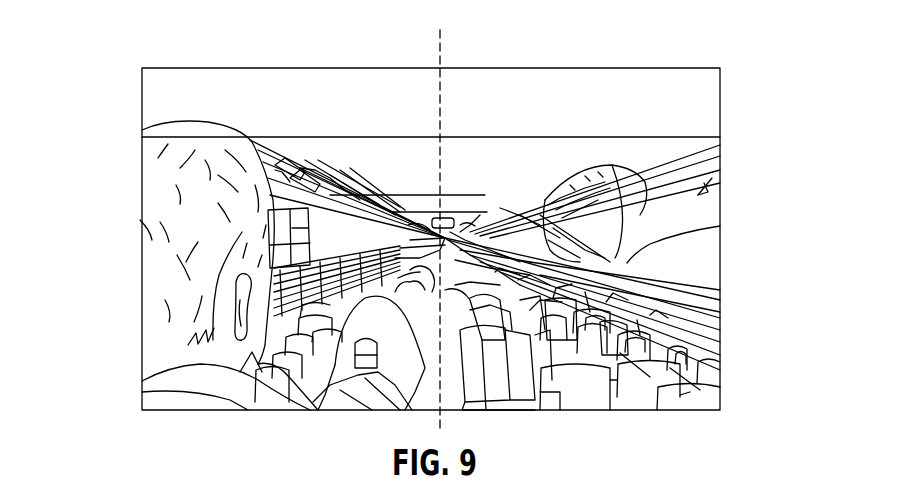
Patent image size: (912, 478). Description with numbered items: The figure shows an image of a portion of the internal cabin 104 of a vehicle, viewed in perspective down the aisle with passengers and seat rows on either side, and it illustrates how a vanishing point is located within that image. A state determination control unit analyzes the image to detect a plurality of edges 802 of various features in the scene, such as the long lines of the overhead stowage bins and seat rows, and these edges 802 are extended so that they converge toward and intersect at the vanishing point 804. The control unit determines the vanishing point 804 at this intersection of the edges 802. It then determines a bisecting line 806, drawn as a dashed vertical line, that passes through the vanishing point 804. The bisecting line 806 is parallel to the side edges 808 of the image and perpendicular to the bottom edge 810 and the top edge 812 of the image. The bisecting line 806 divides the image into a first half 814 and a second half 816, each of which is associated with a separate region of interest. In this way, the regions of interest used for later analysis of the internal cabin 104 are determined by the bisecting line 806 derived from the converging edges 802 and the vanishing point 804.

The internal cabin 104 is at (712, 178).
The edges 802 is at (293, 158).
The vanishing point 804 is at (490, 213).
The bisecting line 806 is at (441, 63).
The side edges 808 is at (140, 290).
The bottom edge 810 is at (575, 412).
The top edge 812 is at (378, 66).
The first half 814 is at (250, 412).
The second half 816 is at (672, 412).